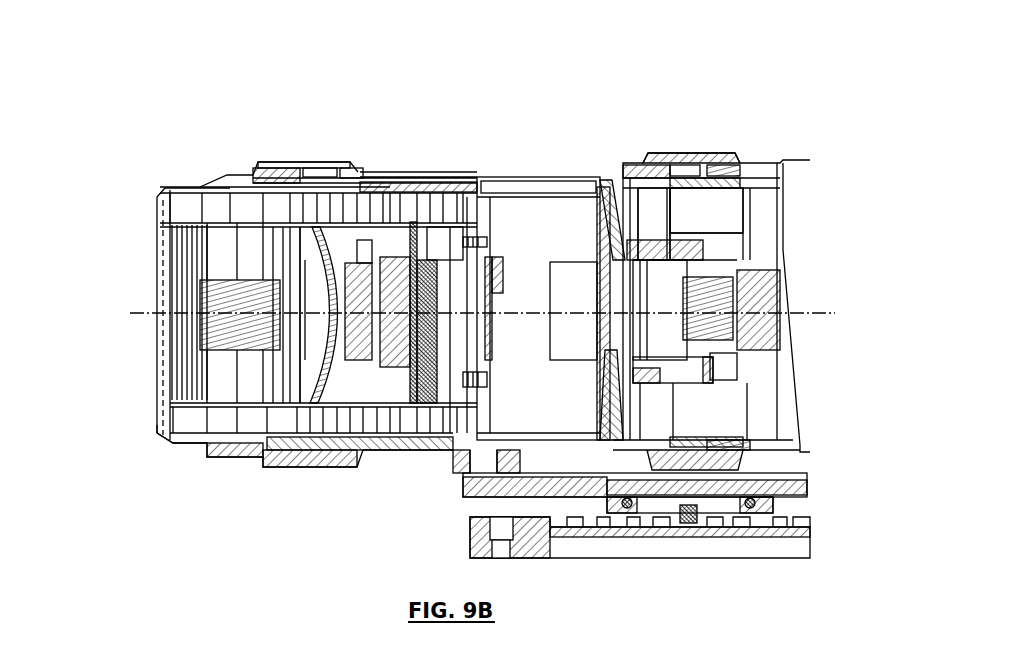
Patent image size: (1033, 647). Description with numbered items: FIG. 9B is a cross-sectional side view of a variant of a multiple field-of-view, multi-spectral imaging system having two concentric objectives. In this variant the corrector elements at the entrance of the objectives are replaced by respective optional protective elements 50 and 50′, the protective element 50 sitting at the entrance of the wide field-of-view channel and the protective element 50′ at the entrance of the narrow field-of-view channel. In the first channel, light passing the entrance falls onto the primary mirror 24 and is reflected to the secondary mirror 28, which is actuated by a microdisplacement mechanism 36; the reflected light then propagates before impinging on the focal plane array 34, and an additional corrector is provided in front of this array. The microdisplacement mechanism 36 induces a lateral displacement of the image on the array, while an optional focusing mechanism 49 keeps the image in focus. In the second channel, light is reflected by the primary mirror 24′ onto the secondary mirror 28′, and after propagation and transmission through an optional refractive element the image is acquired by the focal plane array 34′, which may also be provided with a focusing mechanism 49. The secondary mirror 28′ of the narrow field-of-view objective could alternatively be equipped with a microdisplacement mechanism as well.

The primary mirror 24 is at (345, 265).
The primary mirror 24′ is at (605, 200).
The secondary mirror 28 is at (330, 318).
The secondary mirror 28′ is at (483, 380).
The focal plane array 34 is at (346, 250).
The focal plane array 34′ is at (625, 185).
The microdisplacement mechanism 36 is at (245, 297).
The focusing mechanism 49 is at (318, 165).
The protective element 50 is at (160, 252).
The protective element 50′ is at (162, 435).